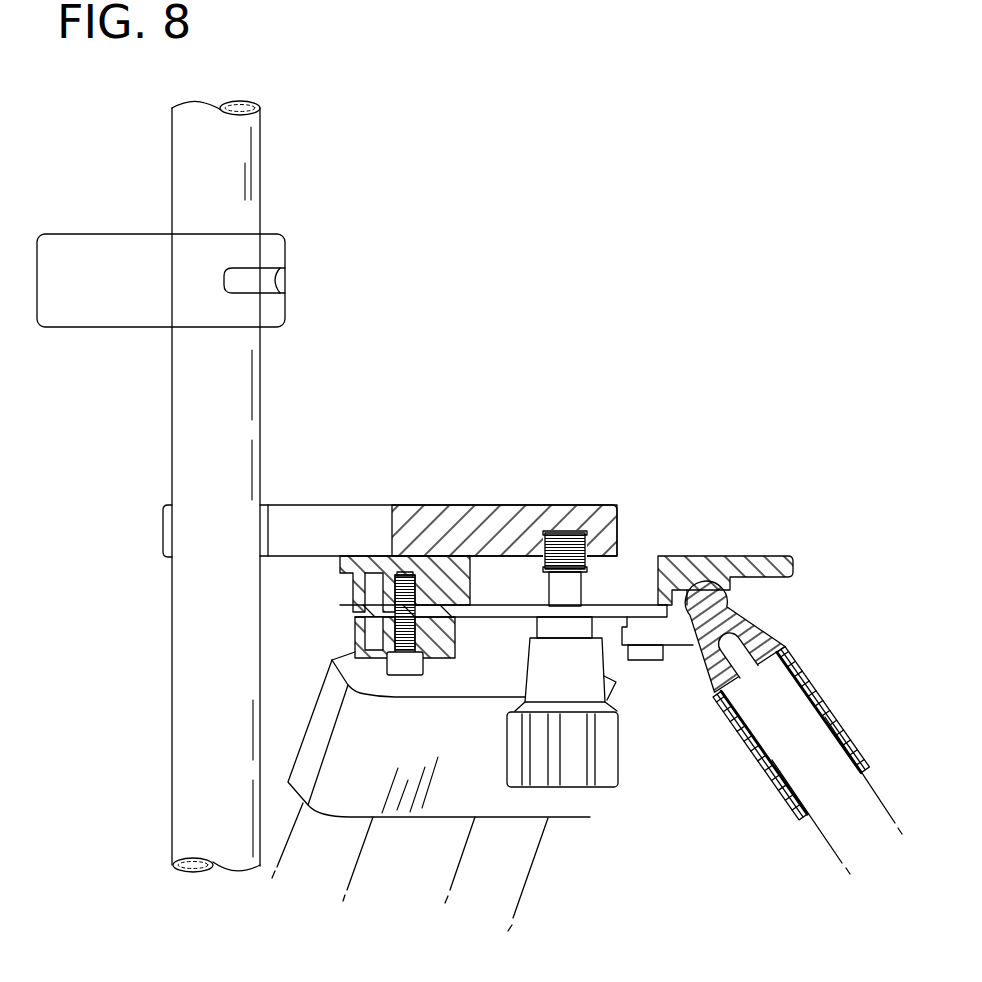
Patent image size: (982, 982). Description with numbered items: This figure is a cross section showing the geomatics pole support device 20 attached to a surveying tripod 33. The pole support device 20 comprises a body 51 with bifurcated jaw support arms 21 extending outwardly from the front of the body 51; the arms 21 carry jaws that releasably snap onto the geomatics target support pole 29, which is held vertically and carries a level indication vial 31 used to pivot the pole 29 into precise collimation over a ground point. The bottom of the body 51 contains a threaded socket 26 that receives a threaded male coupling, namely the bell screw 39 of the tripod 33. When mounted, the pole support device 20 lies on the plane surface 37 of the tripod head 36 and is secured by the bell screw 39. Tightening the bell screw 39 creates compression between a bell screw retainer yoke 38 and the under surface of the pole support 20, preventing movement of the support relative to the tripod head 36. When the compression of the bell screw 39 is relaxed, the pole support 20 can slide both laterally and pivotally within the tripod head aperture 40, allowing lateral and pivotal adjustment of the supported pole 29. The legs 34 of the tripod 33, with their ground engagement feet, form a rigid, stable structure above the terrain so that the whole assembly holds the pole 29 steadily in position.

The pole support device 20 is at (390, 462).
The jaw support arms 21 is at (390, 462).
The socket 26 is at (573, 532).
The geomatics target support pole 29 is at (262, 178).
The level indication vial 31 is at (118, 234).
The surveying tripod 33 is at (808, 667).
The legs 34 is at (827, 709).
The tripod head 36 is at (784, 544).
The plane surface 37 is at (720, 555).
The bell screw retainer yoke 38 is at (503, 606).
The bell screw 39 is at (570, 677).
The tripod head aperture 40 is at (774, 528).
The body 51 is at (477, 505).